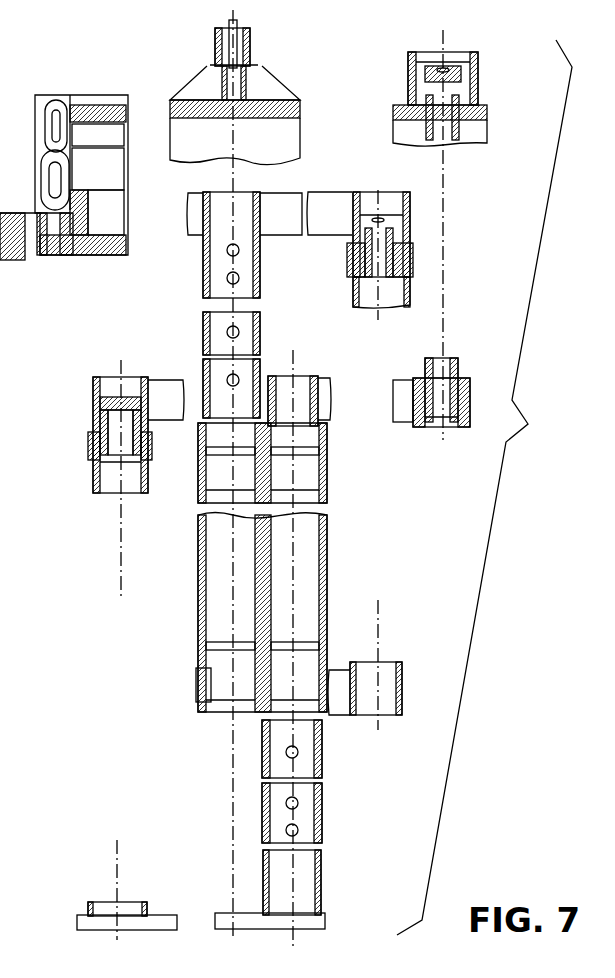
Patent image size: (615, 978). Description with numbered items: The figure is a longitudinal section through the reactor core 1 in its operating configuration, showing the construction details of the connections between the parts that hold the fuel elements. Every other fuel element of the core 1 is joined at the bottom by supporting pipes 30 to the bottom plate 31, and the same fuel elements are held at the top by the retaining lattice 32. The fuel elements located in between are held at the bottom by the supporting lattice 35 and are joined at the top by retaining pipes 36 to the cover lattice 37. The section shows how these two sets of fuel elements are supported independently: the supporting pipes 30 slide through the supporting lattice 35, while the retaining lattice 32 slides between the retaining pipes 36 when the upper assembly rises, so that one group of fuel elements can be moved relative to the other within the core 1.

The core 1 is at (305, 540).
The supporting pipes 30 is at (300, 872).
The bottom plate 31 is at (78, 918).
The retaining lattice 32 is at (322, 408).
The supporting lattice 35 is at (337, 700).
The retaining pipes 36 is at (228, 316).
The cover lattice 37 is at (327, 214).